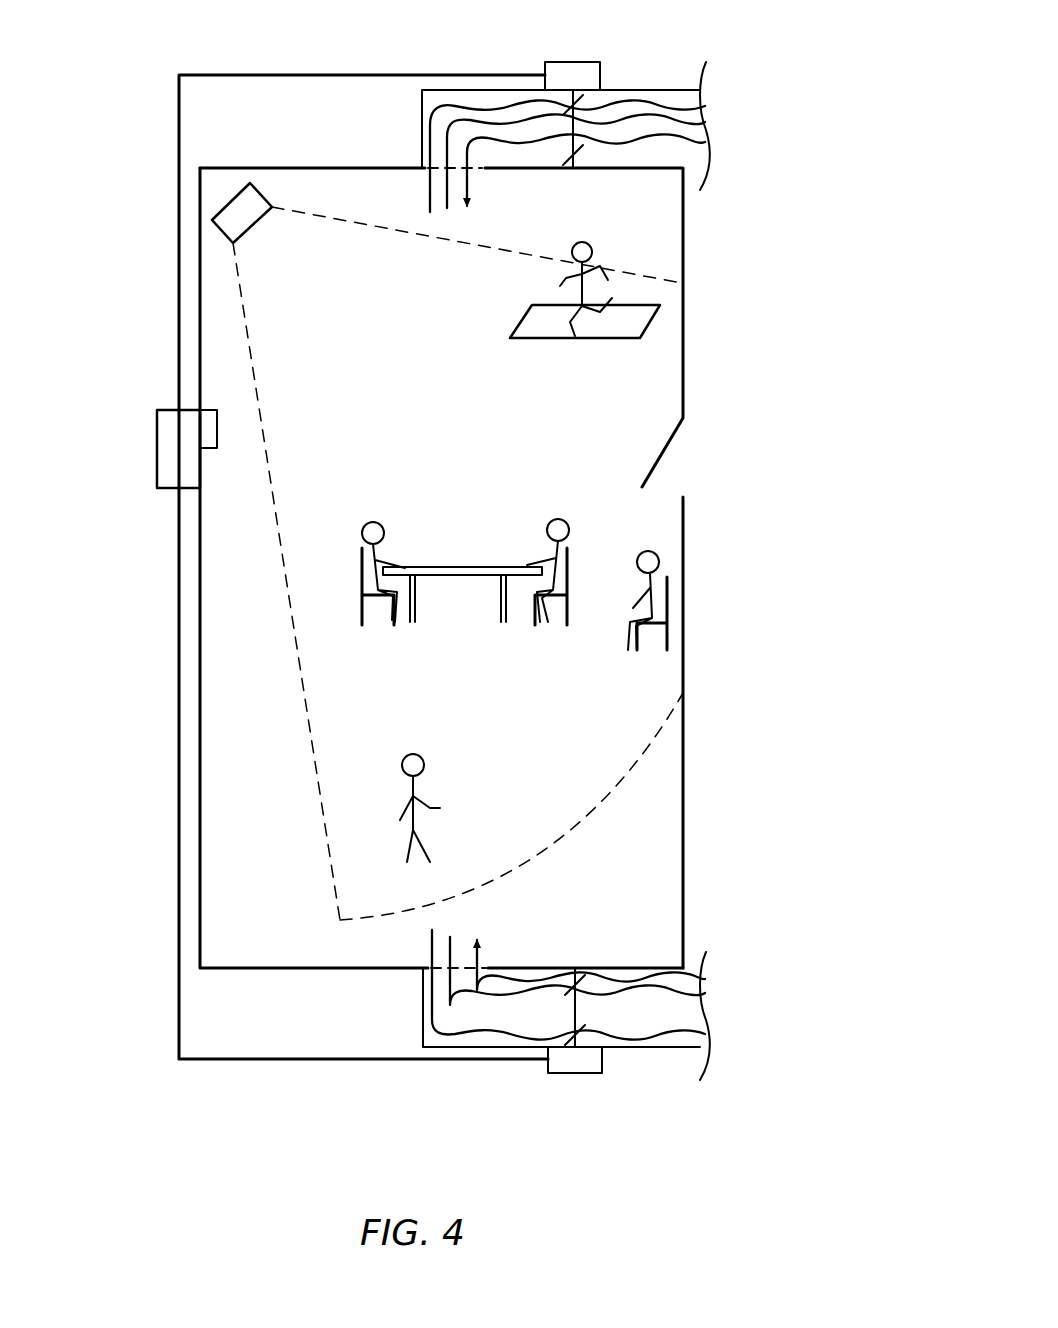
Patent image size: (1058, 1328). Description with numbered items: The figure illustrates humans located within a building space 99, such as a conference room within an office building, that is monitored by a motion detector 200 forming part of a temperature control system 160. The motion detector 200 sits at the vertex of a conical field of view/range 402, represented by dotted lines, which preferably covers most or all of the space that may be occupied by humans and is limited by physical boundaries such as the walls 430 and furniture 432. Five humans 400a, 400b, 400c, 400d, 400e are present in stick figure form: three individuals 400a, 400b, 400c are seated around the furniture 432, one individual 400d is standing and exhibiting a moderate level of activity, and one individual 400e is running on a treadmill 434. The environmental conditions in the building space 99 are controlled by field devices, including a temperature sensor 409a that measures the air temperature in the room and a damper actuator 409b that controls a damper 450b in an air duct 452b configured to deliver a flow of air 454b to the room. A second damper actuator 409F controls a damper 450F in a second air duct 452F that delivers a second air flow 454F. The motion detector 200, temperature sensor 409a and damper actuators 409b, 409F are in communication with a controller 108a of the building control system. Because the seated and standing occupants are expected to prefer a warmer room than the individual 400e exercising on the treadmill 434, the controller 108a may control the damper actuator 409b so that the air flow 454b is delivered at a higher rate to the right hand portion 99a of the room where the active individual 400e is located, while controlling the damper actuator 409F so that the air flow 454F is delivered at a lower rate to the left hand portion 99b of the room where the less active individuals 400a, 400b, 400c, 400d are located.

The building space 99 is at (213, 878).
The right hand portion of the room 99a is at (383, 168).
The left hand portion of the room 99b is at (357, 953).
The controller 108a is at (157, 452).
The temperature control system 160 is at (134, 516).
The motion detector 200 is at (272, 207).
The field of view/range 402 is at (290, 612).
The temperature sensor 409a is at (217, 448).
The damper actuator 409b is at (575, 62).
The second damper actuator 409F is at (575, 1073).
The walls 430 is at (683, 667).
The furniture 432 is at (482, 567).
The treadmill 434 is at (519, 342).
The human 400a is at (375, 521).
The human 400b is at (556, 519).
The human 400c is at (645, 551).
The human 400d is at (425, 764).
The human 400e is at (565, 258).
The damper 450b is at (573, 160).
The damper 450F is at (595, 1010).
The air duct 452b is at (665, 90).
The second air duct 452F is at (678, 1047).
The flow of air 454b is at (503, 148).
The air flow 454F is at (452, 1030).